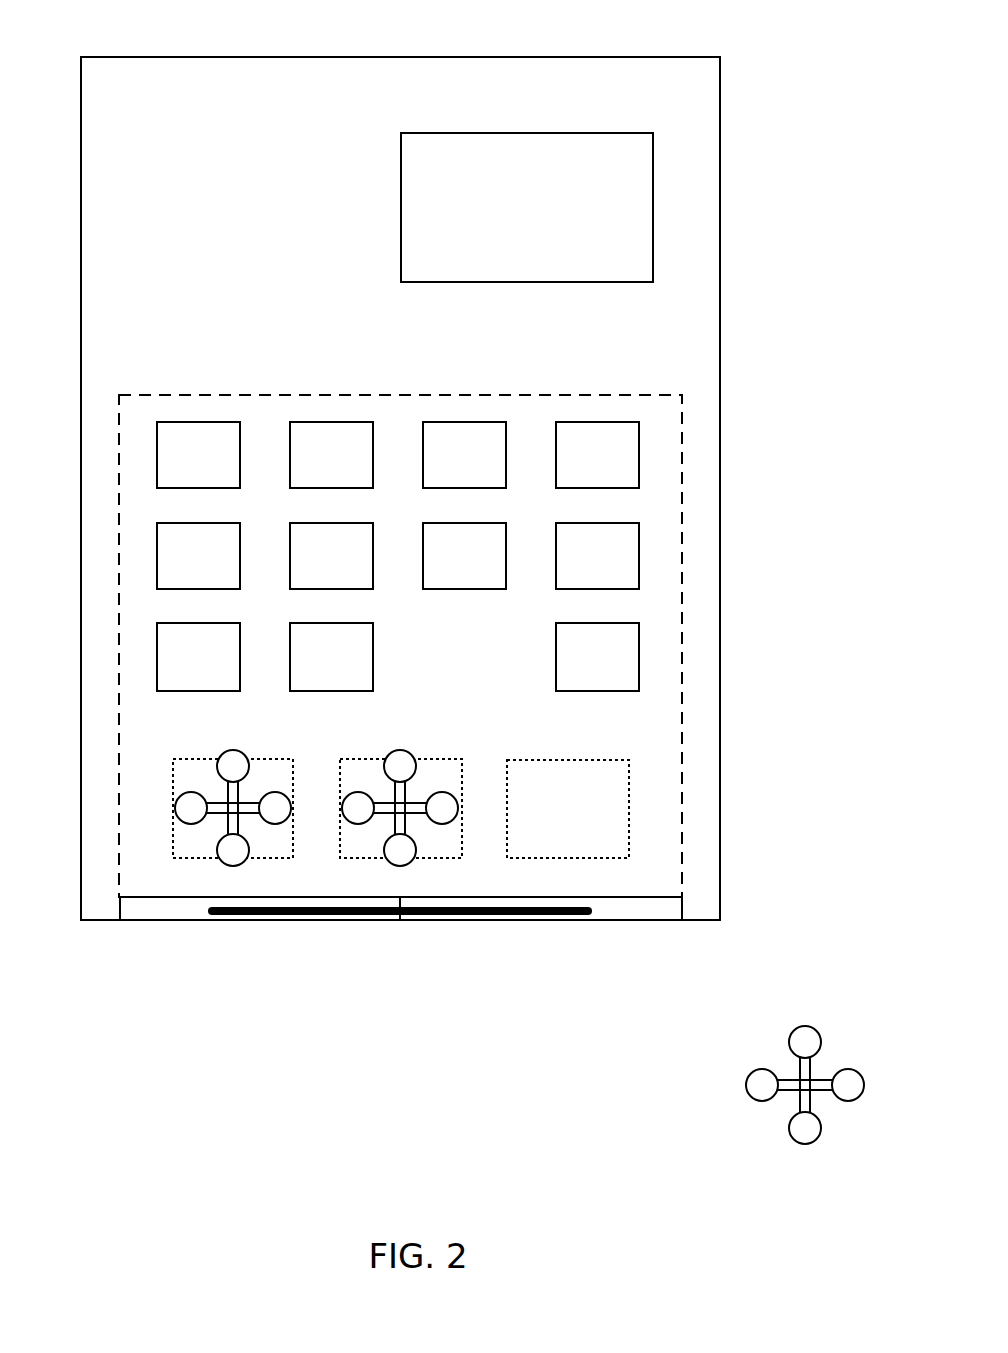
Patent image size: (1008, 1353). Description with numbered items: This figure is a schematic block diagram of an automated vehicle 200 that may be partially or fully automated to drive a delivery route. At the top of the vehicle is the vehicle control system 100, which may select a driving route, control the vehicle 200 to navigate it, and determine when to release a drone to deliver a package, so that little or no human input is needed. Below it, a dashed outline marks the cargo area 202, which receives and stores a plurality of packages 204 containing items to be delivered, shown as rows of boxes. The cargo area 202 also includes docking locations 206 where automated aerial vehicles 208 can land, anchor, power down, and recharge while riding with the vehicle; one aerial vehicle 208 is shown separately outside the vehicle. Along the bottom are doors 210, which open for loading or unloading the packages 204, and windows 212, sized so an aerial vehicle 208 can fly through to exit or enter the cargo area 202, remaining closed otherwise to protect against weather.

The vehicle control system 100 is at (507, 249).
The automated vehicle 200 is at (122, 57).
The cargo area 202 is at (662, 395).
The packages 204 is at (639, 555).
The docking locations 206 is at (629, 810).
The automated aerial vehicles 208 is at (805, 1145).
The doors 210 is at (183, 920).
The windows 212 is at (323, 920).